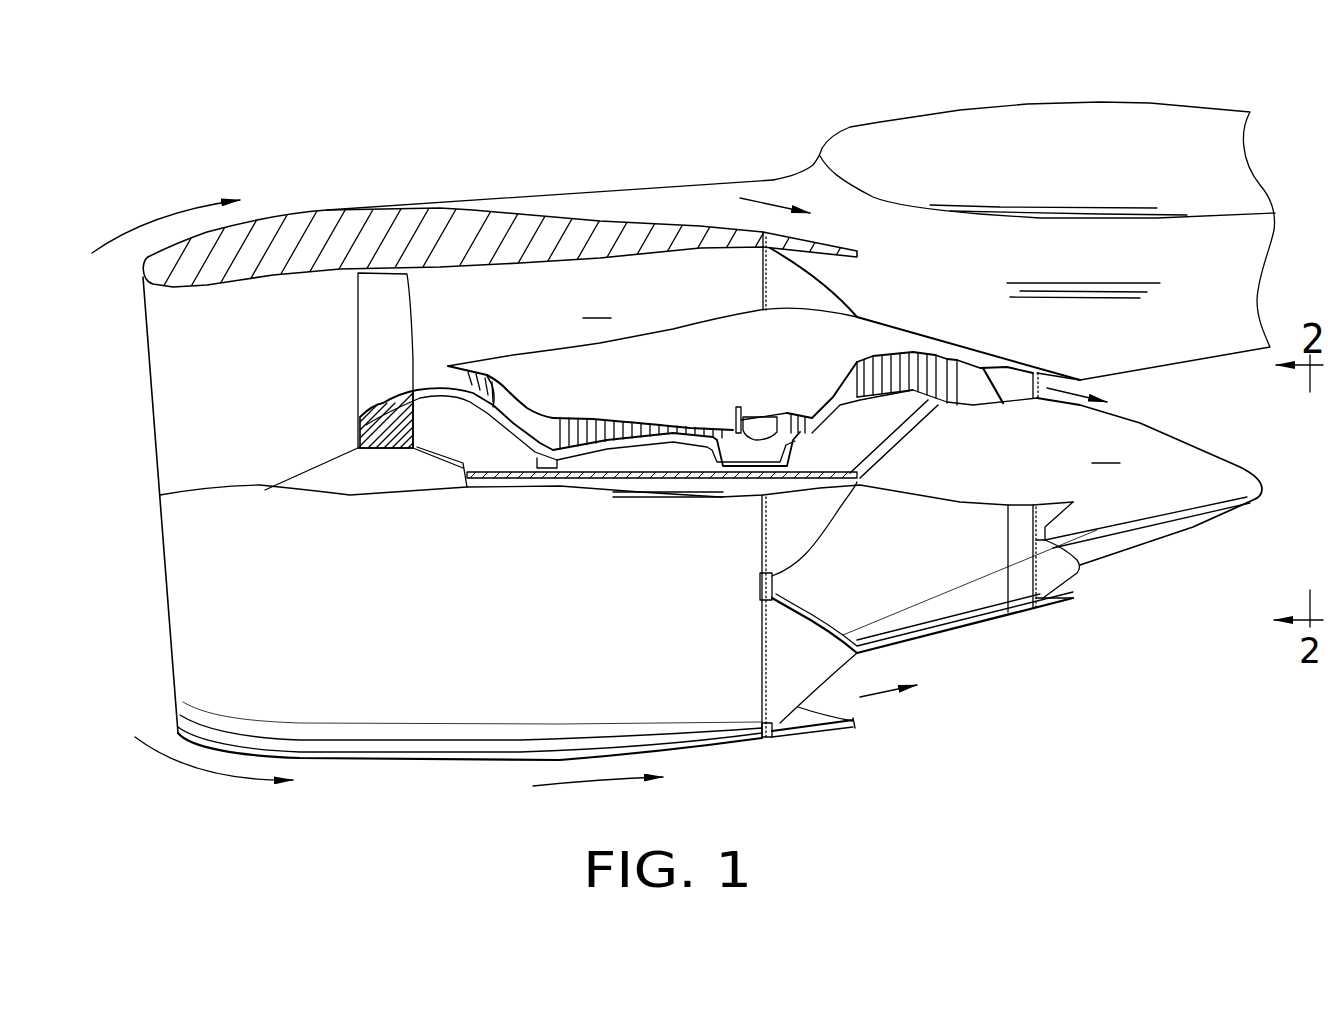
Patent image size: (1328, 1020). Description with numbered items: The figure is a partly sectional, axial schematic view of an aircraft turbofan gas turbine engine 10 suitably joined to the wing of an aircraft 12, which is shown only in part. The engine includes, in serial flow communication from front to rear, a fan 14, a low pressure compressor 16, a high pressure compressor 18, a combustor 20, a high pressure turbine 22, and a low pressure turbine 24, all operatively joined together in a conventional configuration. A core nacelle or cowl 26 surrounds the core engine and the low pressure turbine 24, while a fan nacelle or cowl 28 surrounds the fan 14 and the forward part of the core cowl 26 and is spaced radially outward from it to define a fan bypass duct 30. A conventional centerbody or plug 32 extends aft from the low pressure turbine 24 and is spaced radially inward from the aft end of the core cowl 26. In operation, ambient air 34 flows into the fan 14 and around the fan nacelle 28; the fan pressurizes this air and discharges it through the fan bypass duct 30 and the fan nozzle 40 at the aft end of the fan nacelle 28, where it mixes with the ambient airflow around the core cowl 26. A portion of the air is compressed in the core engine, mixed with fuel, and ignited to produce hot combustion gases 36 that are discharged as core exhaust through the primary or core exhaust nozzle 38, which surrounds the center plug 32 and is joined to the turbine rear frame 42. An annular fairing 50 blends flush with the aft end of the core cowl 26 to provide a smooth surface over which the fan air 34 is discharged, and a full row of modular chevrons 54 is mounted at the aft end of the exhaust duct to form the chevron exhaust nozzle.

The aircraft turbofan gas turbine engine 10 is at (173, 183).
The aircraft 12 is at (883, 137).
The fan 14 is at (357, 347).
The low pressure compressor 16 is at (503, 368).
The high pressure compressor 18 is at (643, 420).
The combustor 20 is at (757, 412).
The high pressure turbine 22 is at (797, 397).
The low pressure turbine 24 is at (928, 362).
The core nacelle or cowl 26 is at (993, 627).
The fan nacelle or cowl 28 is at (460, 230).
The fan bypass duct 30 is at (652, 328).
The centerbody or plug 32 is at (1149, 469).
The ambient air 34 is at (880, 282).
The hot combustion gases 36 is at (1090, 592).
The core exhaust nozzle 38 is at (1077, 604).
The fan nozzle 40 is at (849, 740).
The turbine rear frame 42 is at (978, 392).
The annular fairing 50 is at (1017, 617).
The modular chevrons 54 is at (1055, 560).